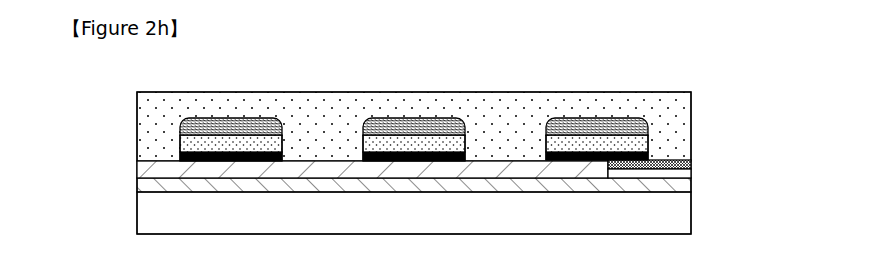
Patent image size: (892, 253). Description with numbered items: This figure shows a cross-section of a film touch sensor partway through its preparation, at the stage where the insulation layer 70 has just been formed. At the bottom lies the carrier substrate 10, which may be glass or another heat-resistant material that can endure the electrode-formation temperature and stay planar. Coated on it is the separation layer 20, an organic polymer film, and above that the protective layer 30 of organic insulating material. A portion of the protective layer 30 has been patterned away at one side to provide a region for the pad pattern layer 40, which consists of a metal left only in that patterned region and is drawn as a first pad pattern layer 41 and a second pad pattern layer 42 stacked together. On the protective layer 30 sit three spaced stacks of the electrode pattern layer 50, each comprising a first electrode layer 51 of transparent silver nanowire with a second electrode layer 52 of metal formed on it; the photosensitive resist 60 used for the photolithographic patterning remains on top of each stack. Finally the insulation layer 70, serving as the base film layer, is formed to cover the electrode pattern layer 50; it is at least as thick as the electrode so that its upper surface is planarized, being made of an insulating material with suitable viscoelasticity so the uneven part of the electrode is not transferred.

The carrier substrate 10 is at (692, 218).
The separation layer 20 is at (692, 181).
The protective layer 30 is at (137, 170).
The pad pattern layer 40 is at (707, 144).
The first pad pattern layer 41 is at (692, 173).
The second pad pattern layer 42 is at (691, 166).
The electrode pattern layer 50 is at (358, 144).
The first electrode layer 51 is at (180, 157).
The second electrode layer 52 is at (180, 143).
The photosensitive resist 60 is at (183, 119).
The insulation layer 70 is at (692, 103).